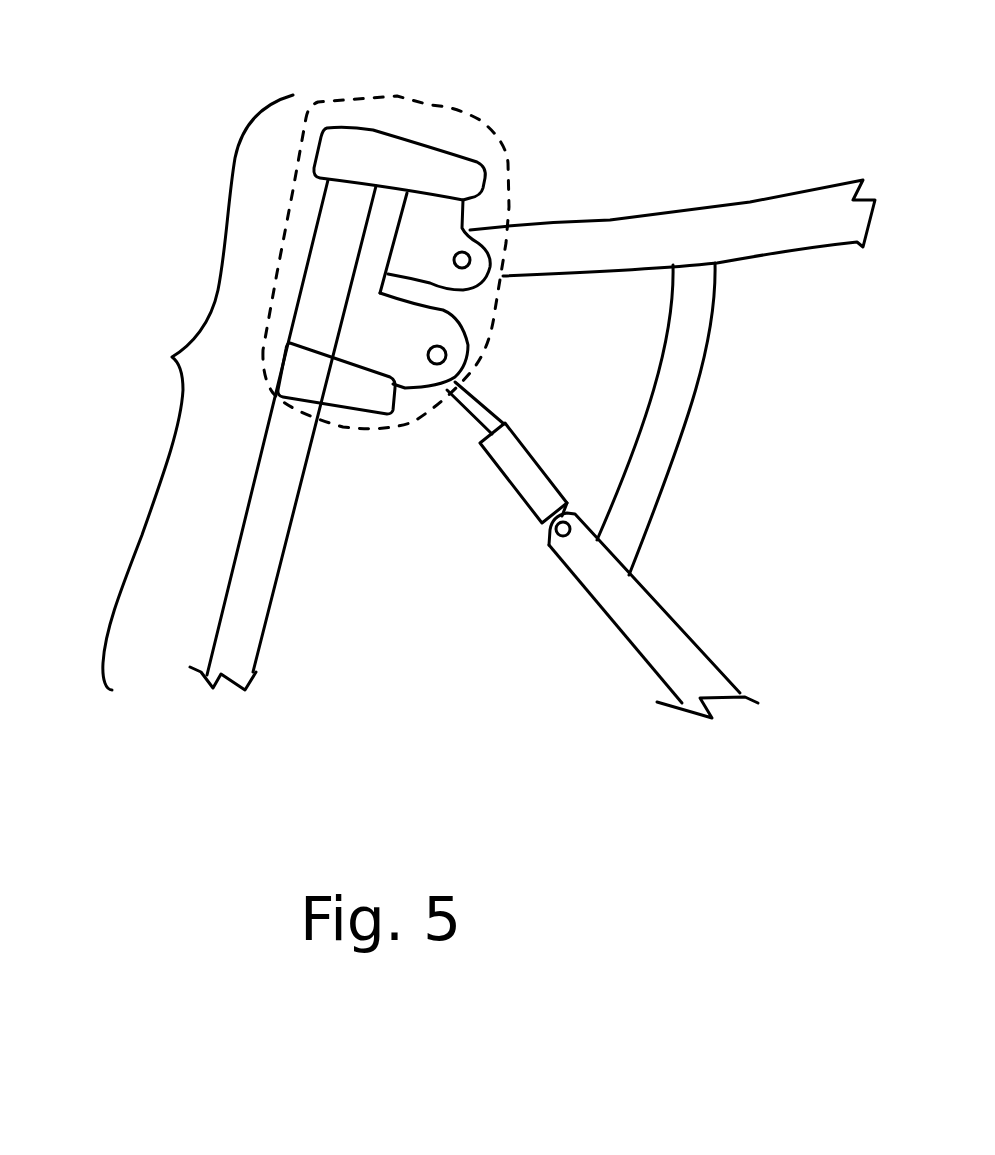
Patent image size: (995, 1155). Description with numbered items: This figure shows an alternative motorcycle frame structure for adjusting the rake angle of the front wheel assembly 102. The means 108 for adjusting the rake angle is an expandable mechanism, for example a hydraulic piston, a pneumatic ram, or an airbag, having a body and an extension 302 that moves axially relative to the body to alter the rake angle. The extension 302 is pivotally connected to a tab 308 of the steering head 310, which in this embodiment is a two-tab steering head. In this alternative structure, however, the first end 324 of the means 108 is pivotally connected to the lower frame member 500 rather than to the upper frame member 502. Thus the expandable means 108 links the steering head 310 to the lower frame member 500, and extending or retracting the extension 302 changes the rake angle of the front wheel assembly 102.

The front wheel assembly 102 is at (219, 392).
The steering head 310 is at (405, 272).
The tab 308 is at (412, 390).
The upper frame member 502 is at (665, 208).
The extension 302 is at (477, 398).
The means for adjusting the rake angle 108 is at (545, 429).
The first end 324 is at (582, 485).
The lower frame member 500 is at (578, 580).